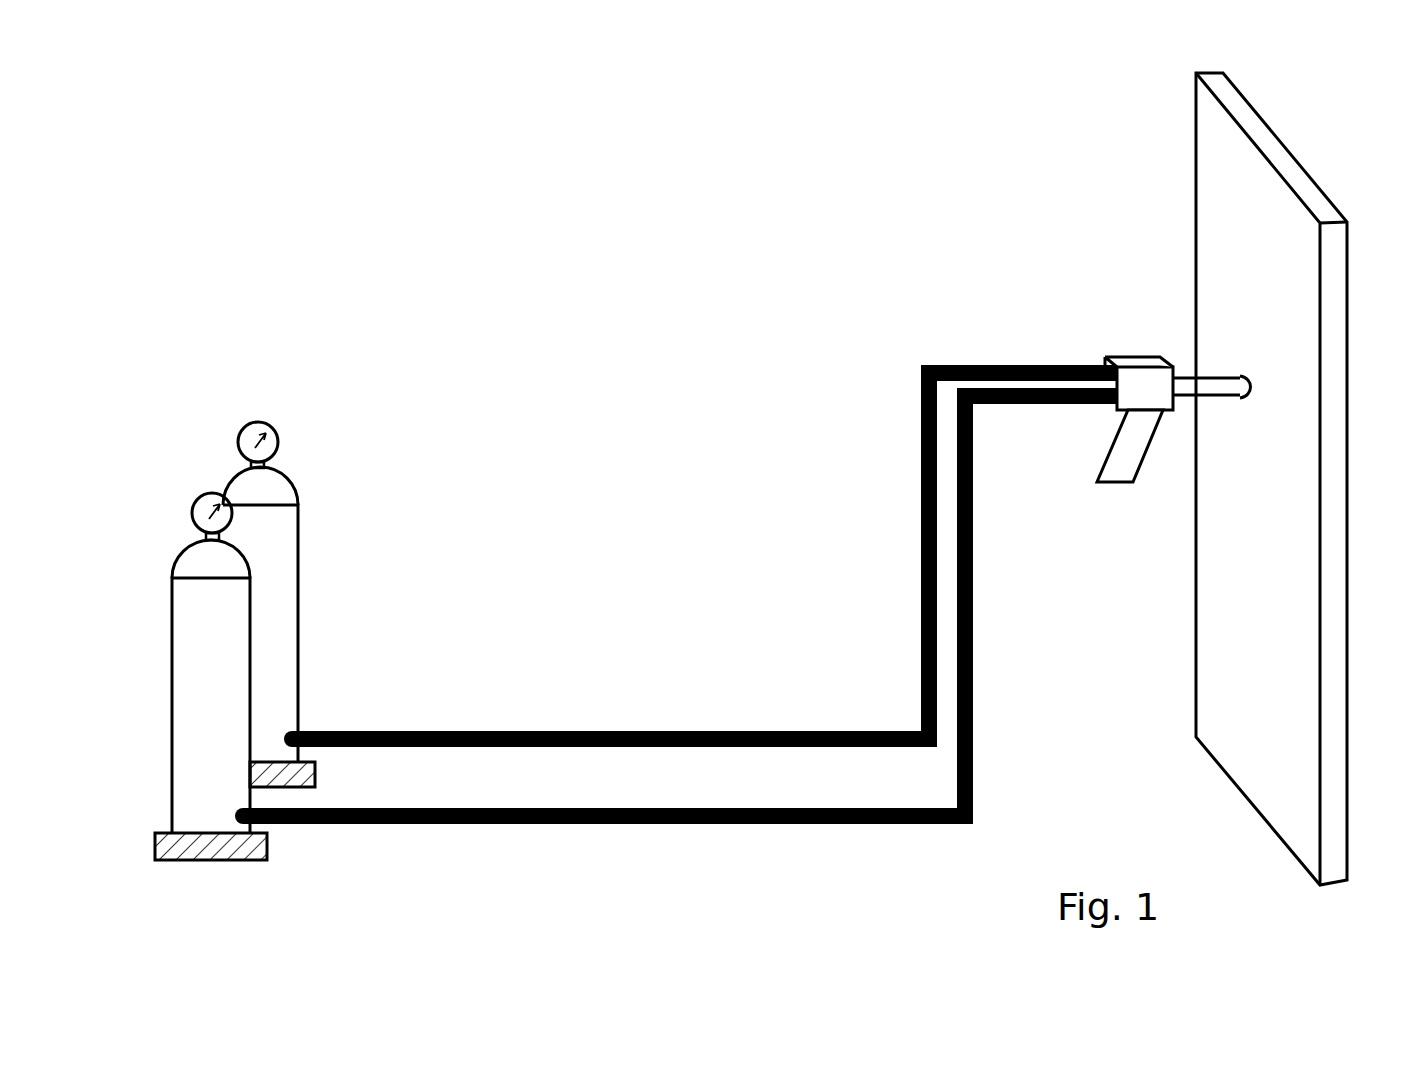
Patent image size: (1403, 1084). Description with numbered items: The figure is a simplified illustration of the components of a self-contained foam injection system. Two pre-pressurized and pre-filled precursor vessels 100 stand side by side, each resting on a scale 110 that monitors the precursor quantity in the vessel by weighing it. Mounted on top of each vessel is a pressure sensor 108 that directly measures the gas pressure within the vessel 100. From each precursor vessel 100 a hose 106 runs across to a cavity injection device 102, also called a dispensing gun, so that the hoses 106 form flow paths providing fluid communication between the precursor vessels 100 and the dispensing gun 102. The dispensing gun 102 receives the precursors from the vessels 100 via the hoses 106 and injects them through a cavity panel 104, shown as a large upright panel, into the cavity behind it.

The precursor vessel 100 is at (227, 610).
The cavity injection device 102 is at (1163, 397).
The cavity panel 104 is at (1282, 661).
The hose 106 is at (638, 731).
The pressure sensor 108 is at (253, 422).
The scale 110 is at (215, 859).